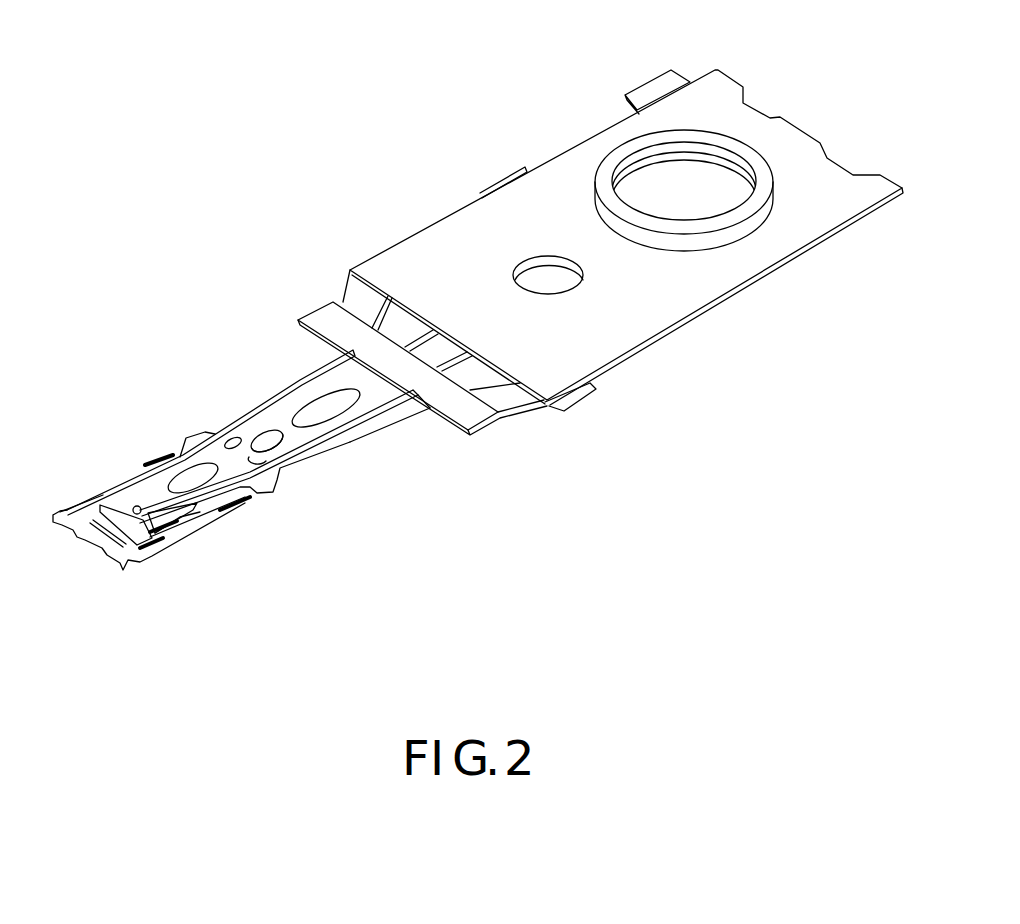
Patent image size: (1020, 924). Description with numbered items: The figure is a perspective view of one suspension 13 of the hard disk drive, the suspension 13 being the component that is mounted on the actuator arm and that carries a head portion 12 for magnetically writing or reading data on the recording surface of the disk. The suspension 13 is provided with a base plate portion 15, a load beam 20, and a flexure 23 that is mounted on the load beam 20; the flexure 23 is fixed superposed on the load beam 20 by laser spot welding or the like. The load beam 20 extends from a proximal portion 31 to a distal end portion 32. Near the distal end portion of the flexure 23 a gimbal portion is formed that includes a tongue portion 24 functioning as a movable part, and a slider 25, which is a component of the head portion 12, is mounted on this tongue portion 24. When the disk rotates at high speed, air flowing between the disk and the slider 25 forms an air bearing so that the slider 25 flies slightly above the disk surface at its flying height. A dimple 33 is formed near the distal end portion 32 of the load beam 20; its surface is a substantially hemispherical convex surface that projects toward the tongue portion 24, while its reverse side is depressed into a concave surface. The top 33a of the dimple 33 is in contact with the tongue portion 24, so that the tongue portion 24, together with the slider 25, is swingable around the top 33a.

The head portion 12 is at (102, 452).
The suspension 13 is at (540, 95).
The base plate portion 15 is at (492, 241).
The load beam 20 is at (247, 432).
The flexure 23 is at (317, 458).
The tongue portion 24 is at (190, 510).
The slider 25 is at (160, 527).
The proximal portion 31 is at (358, 385).
The distal end portion 32 is at (145, 497).
The dimple 33 is at (135, 512).
The top of the dimple 33a is at (132, 523).